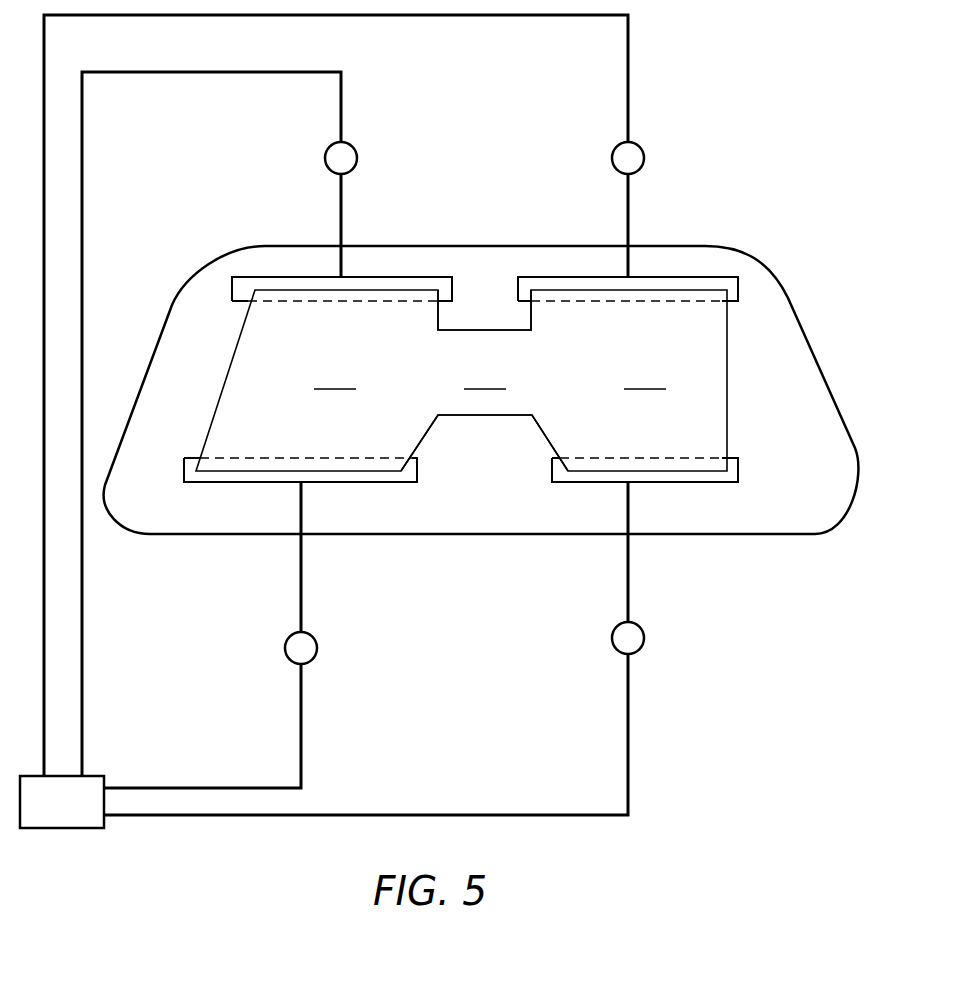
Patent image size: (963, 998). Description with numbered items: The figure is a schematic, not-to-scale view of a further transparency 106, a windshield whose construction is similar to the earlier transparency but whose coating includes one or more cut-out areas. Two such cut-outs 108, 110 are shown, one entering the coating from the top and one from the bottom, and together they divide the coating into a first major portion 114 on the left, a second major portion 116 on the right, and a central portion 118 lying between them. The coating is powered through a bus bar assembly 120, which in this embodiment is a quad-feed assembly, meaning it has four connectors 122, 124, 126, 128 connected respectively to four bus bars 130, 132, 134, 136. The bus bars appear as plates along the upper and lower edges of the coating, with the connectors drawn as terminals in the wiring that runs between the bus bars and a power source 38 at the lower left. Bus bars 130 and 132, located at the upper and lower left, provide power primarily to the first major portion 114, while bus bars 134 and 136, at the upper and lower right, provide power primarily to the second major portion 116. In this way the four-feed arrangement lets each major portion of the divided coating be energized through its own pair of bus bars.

The controller / power source 38 is at (68, 829).
The transparency 106 is at (762, 191).
The cut-out 108 is at (483, 305).
The cut-out 110 is at (488, 452).
The first major portion 114 is at (335, 375).
The second major portion 116 is at (645, 375).
The central portion 118 is at (485, 375).
The bus bar assembly 120 is at (795, 276).
The connector 122 is at (357, 160).
The connector 124 is at (317, 650).
The connector 126 is at (677, 167).
The connector 128 is at (612, 642).
The bus bar 130 is at (282, 276).
The bus bar 132 is at (243, 483).
The bus bar 134 is at (605, 277).
The bus bar 136 is at (715, 483).